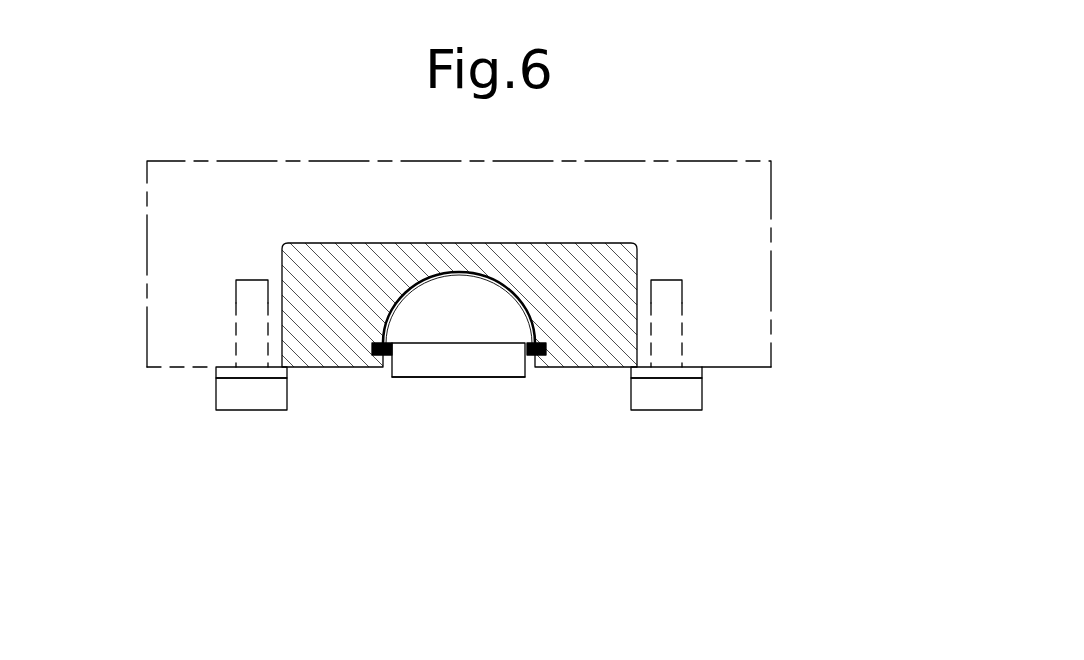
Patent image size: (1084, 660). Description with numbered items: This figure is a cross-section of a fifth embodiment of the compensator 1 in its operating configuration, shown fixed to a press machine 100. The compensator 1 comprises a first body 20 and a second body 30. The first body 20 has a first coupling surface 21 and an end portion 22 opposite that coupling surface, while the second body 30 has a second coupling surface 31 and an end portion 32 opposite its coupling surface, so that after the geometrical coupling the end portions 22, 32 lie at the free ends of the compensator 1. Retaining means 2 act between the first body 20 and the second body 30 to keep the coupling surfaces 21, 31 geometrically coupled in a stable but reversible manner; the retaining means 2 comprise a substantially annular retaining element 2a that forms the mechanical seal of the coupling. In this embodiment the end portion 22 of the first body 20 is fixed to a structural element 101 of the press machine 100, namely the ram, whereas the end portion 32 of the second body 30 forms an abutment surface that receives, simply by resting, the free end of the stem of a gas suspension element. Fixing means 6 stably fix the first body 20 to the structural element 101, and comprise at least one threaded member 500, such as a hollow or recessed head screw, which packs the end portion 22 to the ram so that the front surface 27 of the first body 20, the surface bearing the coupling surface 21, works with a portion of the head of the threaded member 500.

The compensator 1 is at (806, 190).
The retaining means 2 is at (359, 378).
The retaining element 2a is at (377, 343).
The fixing means 6 is at (231, 433).
The first body 20 is at (609, 232).
The first coupling surface 21 is at (460, 270).
The end portion 22 is at (520, 243).
The front surface 27 is at (330, 368).
The second body 30 is at (488, 395).
The second coupling surface 31 is at (483, 278).
The end portion 32 is at (445, 378).
The press machine 100 is at (140, 176).
The structural element 101 is at (752, 367).
The threaded member 500 is at (262, 426).